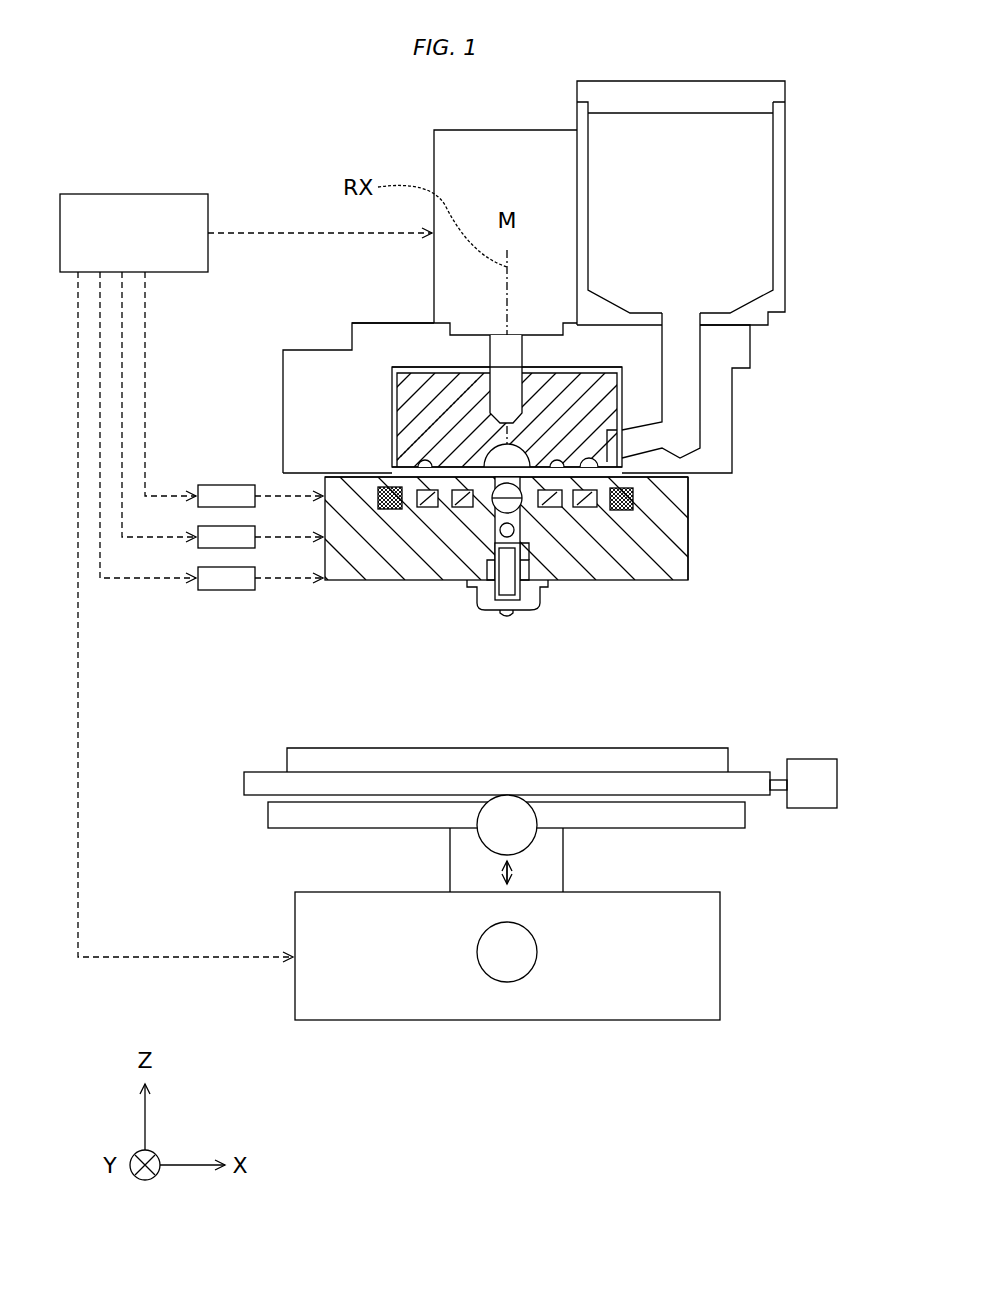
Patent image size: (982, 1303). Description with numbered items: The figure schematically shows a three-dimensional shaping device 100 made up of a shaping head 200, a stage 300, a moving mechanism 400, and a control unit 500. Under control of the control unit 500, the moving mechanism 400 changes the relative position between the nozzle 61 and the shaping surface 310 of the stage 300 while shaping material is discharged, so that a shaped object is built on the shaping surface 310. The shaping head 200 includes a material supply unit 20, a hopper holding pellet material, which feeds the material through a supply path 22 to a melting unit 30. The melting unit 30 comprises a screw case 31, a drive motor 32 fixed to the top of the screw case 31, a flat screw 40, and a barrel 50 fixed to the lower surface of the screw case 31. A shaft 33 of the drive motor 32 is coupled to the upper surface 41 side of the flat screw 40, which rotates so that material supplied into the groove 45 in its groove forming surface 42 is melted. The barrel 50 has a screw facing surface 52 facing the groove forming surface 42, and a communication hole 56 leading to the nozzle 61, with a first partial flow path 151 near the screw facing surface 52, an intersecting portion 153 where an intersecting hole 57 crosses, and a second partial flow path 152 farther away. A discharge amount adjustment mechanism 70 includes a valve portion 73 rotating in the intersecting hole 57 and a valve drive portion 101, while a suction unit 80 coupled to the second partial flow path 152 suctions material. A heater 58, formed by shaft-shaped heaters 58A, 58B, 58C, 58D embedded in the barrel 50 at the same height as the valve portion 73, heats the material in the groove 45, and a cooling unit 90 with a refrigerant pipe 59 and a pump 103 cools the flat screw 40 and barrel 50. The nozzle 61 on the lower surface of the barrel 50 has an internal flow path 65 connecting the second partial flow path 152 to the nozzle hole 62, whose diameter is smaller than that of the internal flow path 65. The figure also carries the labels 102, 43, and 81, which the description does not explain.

The three-dimensional shaping device 100 is at (178, 128).
The shaping head 200 is at (305, 150).
The control unit 500 is at (122, 194).
The valve drive portion 101 is at (222, 485).
The second drive source 102 is at (222, 526).
The pump 103 is at (222, 567).
The material supply unit 20 is at (786, 193).
The supply path 22 is at (680, 387).
The drive motor 32 is at (435, 160).
The shaft 33 is at (482, 345).
The melting unit 30 is at (770, 435).
The screw case 31 is at (390, 323).
The flat screw 40 is at (438, 366).
The upper surface 41 is at (435, 405).
The groove forming surface 42 is at (392, 467).
The rotor groove 43 is at (455, 430).
The groove 45 is at (600, 445).
The screw facing surface 52 is at (484, 455).
The cooling unit 90 is at (782, 507).
The refrigerant pipe 59 is at (640, 495).
The barrel 50 is at (688, 570).
The heater 58 is at (538, 568).
The heater 58A is at (390, 510).
The heater 58B is at (427, 510).
The heater 58C is at (562, 507).
The heater 58D is at (597, 506).
The communication hole 56 is at (584, 567).
The first partial flow path 151 is at (612, 462).
The second partial flow path 152 is at (425, 475).
The intersecting portion 153 is at (644, 538).
The intersecting hole 57 is at (560, 475).
The discharge amount adjustment mechanism 70 is at (539, 591).
The suction unit 80 is at (448, 632).
The valve seat 81 is at (486, 562).
The internal flow path 65 is at (483, 592).
The nozzle 61 is at (532, 607).
The nozzle hole 62 is at (507, 614).
The valve portion 73 is at (548, 585).
The stage 300 is at (549, 781).
The shaping surface 310 is at (663, 747).
The moving mechanism 400 is at (770, 875).